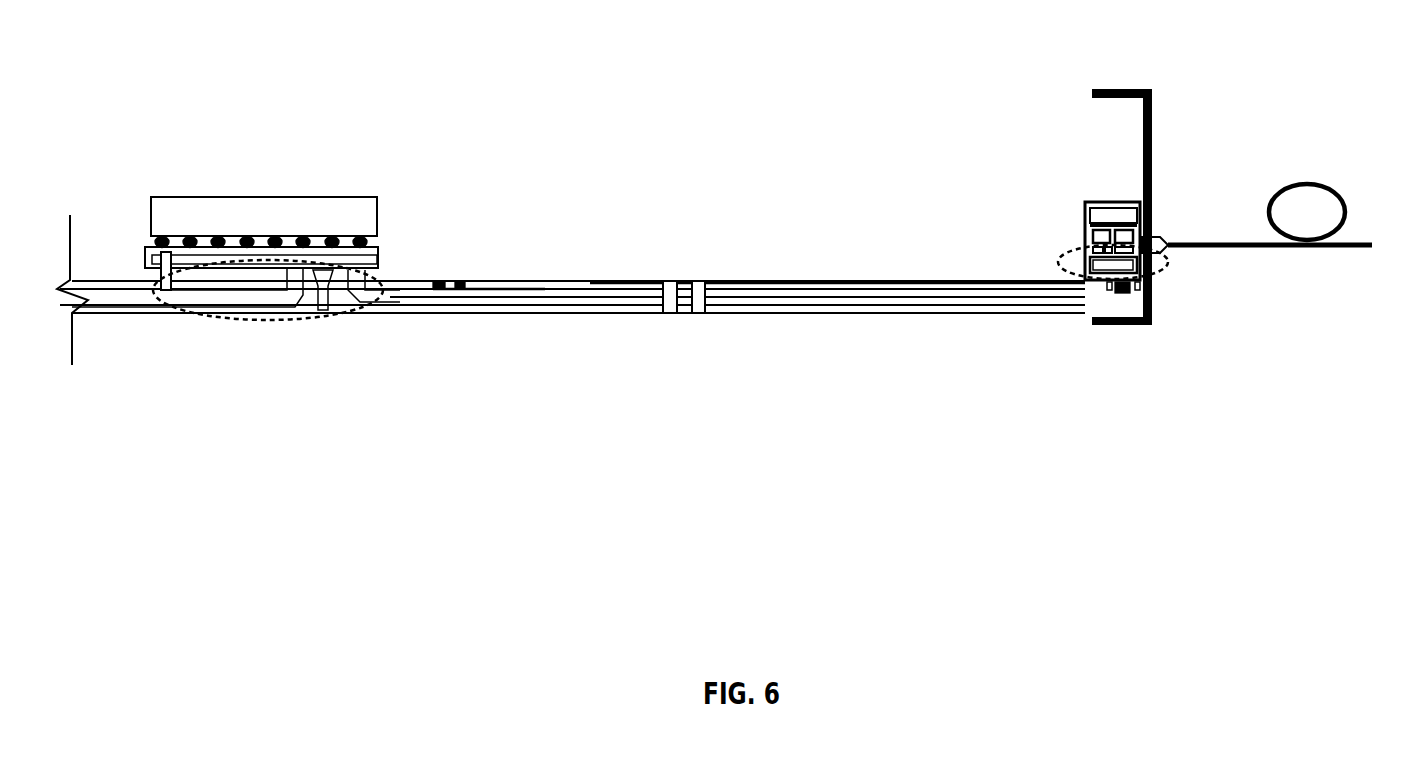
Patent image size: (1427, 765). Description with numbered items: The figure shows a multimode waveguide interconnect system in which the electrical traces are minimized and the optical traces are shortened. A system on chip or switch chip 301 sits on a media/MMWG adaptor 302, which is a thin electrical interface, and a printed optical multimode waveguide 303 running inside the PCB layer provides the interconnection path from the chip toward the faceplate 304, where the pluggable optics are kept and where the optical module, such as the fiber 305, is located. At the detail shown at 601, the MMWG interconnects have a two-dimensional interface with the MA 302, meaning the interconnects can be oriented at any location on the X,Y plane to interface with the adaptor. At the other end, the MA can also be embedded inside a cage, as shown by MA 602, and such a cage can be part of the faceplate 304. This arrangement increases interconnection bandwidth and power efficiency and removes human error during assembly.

The system on chip (SoC)/switch chip 301 is at (265, 206).
The media/MMWG adaptor (MA) 302 is at (378, 268).
The multimode waveguide (MMWG) 303 is at (745, 292).
The faceplate 304 is at (1120, 86).
The fiber 305 is at (1318, 186).
The 2D interface of MMWG interconnects with the MA 601 is at (272, 323).
The MA embedded inside a cage 602 is at (1118, 293).